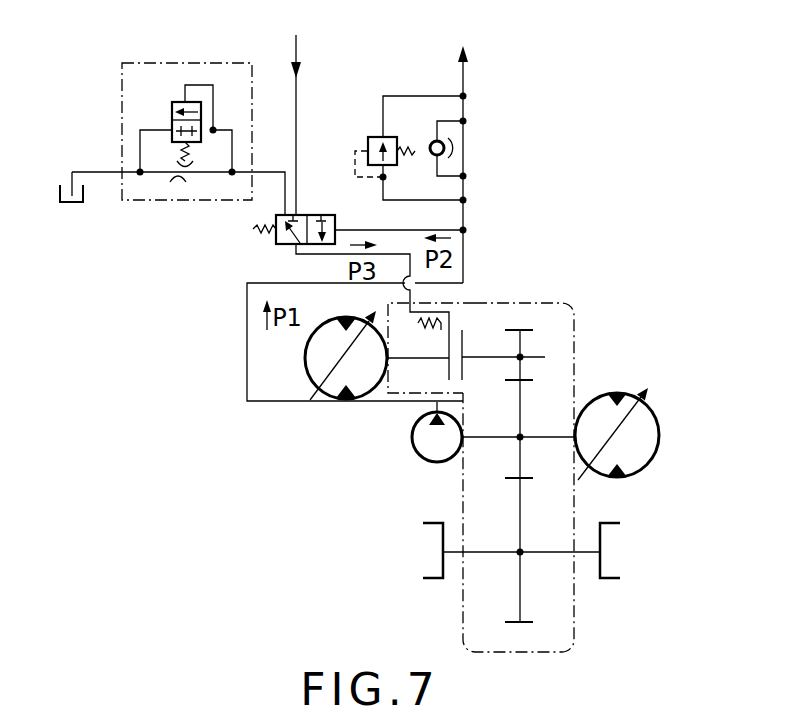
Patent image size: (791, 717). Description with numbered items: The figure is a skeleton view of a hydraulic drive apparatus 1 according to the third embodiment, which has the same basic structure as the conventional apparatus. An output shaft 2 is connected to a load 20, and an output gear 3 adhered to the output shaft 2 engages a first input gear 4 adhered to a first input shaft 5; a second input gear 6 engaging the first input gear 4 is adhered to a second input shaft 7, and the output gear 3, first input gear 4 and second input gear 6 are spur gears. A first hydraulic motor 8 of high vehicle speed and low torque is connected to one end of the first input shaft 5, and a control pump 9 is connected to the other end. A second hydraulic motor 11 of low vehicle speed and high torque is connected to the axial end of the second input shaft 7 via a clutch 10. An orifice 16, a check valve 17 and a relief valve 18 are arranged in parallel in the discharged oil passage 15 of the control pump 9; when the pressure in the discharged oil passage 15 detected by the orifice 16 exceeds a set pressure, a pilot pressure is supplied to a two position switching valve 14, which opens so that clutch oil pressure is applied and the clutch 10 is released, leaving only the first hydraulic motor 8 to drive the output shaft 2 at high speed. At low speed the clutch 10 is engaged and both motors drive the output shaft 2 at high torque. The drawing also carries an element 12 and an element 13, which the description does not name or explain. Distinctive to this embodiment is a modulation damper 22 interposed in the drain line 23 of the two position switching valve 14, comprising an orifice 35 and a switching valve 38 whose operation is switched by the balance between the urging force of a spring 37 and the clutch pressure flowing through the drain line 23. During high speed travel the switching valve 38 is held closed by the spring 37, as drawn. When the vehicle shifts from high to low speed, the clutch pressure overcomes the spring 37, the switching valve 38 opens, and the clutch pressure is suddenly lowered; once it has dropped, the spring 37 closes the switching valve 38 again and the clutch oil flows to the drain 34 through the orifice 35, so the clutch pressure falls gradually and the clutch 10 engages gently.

The hydraulic drive apparatus 1 is at (536, 223).
The output shaft 2 is at (580, 553).
The output gear 3 is at (518, 603).
The first input gear 4 is at (521, 397).
The first input shaft 5 is at (489, 442).
The second input gear 6 is at (522, 343).
The second input shaft 7 is at (490, 358).
The first hydraulic motor 8 is at (660, 434).
The control pump 9 is at (418, 454).
The clutch 10 is at (464, 341).
The second hydraulic motor 11 is at (306, 362).
The adjusting device 12 is at (428, 327).
The control line 13 is at (322, 256).
The two position switching valve 14 is at (318, 215).
The discharged oil passage 15 is at (247, 333).
The orifice 16 is at (472, 145).
The check valve 17 is at (432, 142).
The relief valve 18 is at (376, 137).
The load 20 is at (608, 526).
The modulation damper 22 is at (233, 63).
The drain line 23 is at (272, 170).
The drain 34 is at (72, 203).
The orifice 35 is at (178, 182).
The spring 37 is at (178, 149).
The switching valve 38 is at (172, 122).